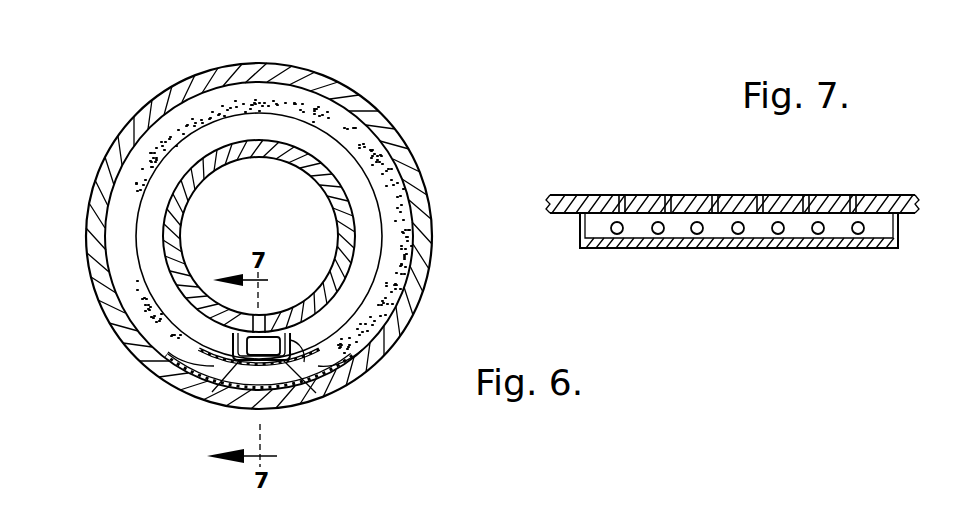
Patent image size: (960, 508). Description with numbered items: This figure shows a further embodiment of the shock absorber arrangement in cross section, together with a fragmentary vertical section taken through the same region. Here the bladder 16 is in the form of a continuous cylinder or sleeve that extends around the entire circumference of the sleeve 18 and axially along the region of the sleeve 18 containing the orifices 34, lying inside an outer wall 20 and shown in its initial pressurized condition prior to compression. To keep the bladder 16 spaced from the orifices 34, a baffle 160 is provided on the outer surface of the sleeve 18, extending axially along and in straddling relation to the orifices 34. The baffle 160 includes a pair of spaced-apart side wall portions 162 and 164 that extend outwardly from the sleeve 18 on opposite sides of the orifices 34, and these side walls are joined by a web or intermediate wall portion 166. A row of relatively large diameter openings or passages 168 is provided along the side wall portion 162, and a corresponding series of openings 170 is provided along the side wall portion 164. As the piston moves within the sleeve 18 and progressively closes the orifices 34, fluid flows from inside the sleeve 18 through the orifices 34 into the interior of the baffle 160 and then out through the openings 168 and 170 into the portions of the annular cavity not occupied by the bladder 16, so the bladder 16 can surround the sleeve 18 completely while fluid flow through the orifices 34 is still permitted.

In FIG. 6, the bladder 16 is at (412, 200).
In FIG. 6, the sleeve 18 is at (205, 158).
In FIG. 7, the sleeve 18 is at (882, 195).
In FIG. 6, the outer casing 20 is at (291, 74).
In FIG. 6, the orifices 34 is at (259, 326).
In FIG. 7, the orifices 34 is at (762, 195).
In FIG. 6, the baffle 160 is at (228, 380).
In FIG. 7, the baffle 160 is at (730, 258).
In FIG. 6, the side wall portion 162 is at (236, 346).
In FIG. 7, the side wall portion 162 is at (637, 250).
In FIG. 6, the side wall portion 164 is at (328, 346).
In FIG. 6, the web or intermediate wall portion 166 is at (253, 362).
In FIG. 7, the web or intermediate wall portion 166 is at (800, 250).
In FIG. 6, the openings or passages 168 is at (199, 377).
In FIG. 7, the openings or passages 168 is at (613, 238).
In FIG. 6, the openings 170 is at (291, 366).